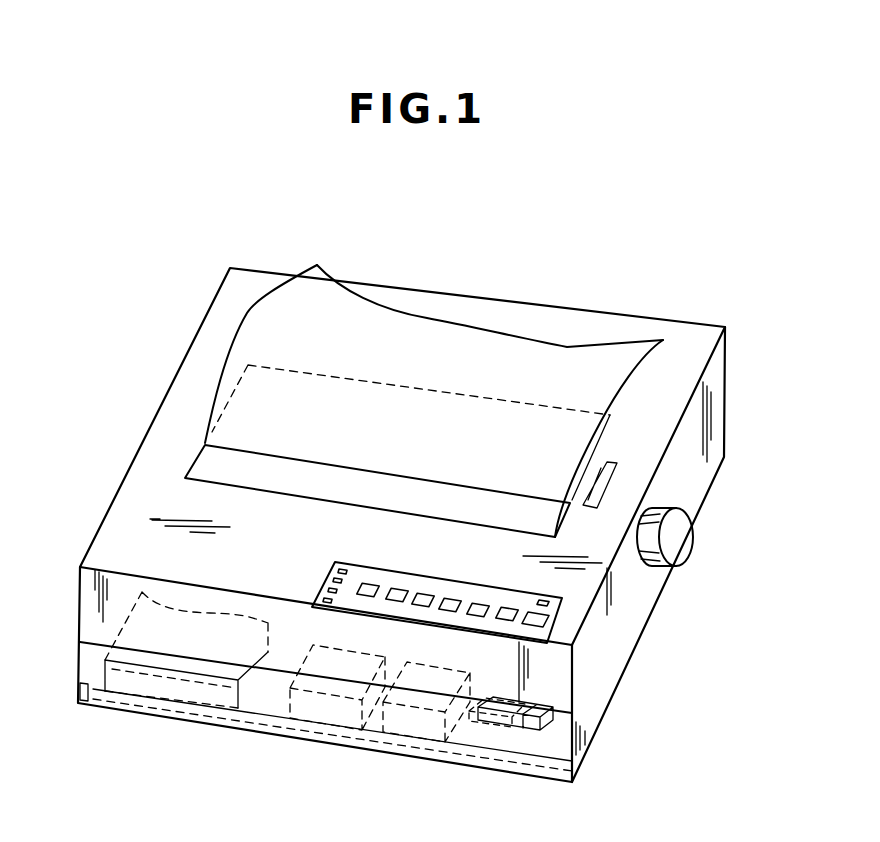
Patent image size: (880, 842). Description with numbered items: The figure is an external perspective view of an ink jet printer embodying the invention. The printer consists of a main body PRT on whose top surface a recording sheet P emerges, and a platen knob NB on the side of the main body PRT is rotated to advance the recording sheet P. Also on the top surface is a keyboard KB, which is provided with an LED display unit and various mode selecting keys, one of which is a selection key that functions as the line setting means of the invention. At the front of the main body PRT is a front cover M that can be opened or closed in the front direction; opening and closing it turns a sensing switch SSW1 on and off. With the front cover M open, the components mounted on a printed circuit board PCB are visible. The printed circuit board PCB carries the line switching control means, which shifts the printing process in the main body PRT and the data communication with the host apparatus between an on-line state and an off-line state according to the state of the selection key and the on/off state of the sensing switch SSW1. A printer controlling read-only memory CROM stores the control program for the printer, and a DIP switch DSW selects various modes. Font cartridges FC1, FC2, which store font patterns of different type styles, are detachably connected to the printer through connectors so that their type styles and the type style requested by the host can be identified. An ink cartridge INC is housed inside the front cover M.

The main body PRT is at (722, 405).
The recording sheet P is at (440, 336).
The platen knob NB is at (680, 537).
The keyboard KB is at (553, 620).
The front cover M is at (80, 642).
The printed circuit board PCB is at (275, 683).
The sensing switch SSW1 is at (93, 697).
The ink cartridge INC is at (150, 687).
The font cartridge FC2 is at (318, 713).
The font cartridge FC1 is at (405, 728).
The printer controlling read-only memory CROM is at (483, 727).
The DIP switch DSW is at (525, 731).